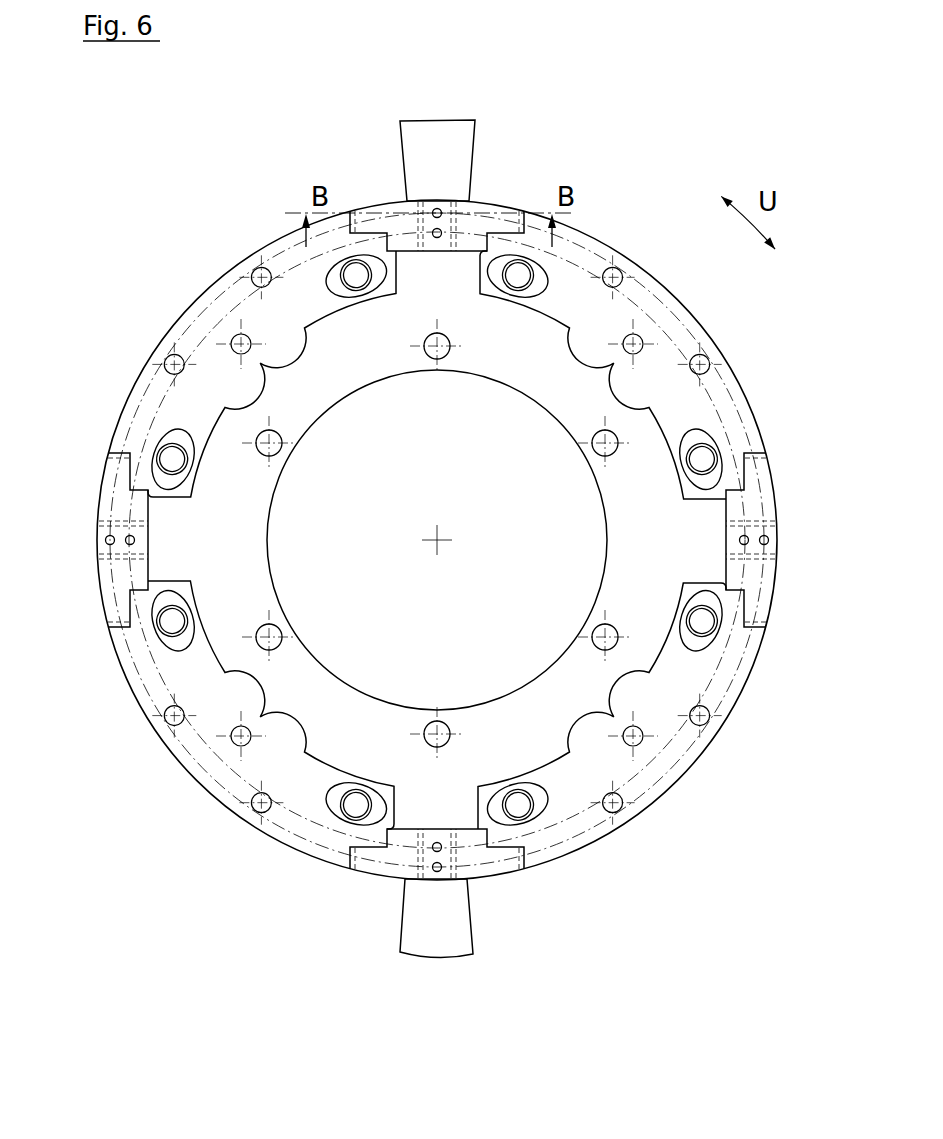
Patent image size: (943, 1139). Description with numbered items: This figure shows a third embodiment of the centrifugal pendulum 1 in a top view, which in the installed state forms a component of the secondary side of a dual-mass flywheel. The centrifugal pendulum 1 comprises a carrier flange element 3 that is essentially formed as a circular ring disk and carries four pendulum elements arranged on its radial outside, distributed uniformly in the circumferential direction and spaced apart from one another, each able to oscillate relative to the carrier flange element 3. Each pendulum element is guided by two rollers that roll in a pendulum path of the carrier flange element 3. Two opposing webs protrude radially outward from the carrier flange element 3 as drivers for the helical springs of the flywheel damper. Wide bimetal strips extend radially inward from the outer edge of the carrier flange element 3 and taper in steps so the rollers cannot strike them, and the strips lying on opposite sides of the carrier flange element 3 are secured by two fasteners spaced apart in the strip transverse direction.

The centrifugal pendulum 1 is at (185, 991).
The carrier flange element 3 is at (362, 726).